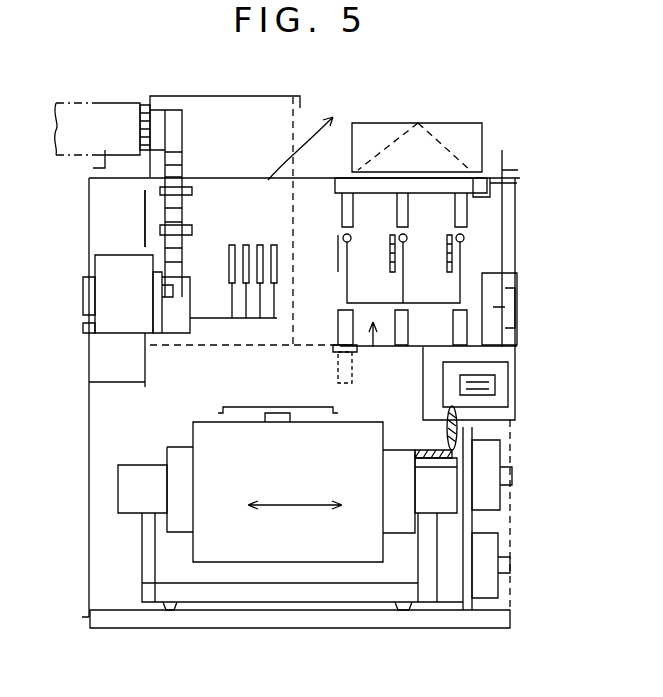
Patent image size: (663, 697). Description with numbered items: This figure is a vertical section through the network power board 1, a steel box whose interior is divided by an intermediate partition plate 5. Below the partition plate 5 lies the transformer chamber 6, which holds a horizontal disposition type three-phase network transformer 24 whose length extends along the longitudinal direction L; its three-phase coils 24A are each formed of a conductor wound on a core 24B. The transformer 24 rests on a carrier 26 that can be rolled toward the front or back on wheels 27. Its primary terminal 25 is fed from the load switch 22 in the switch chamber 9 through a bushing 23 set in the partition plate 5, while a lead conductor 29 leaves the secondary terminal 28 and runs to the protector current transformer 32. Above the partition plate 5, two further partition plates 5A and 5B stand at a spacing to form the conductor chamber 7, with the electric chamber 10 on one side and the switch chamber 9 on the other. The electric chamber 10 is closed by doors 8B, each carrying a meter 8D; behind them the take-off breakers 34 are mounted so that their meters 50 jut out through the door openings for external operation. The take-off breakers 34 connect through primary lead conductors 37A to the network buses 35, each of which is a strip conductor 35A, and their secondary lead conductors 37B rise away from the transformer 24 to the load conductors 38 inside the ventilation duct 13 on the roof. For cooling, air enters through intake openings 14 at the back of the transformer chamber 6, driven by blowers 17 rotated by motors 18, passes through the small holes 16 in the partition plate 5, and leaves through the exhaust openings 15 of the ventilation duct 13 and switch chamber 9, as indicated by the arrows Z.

The network power board 1 is at (168, 77).
The intermediate partition plate 5 is at (487, 343).
The partition plate 5A is at (140, 214).
The partition plate 5B is at (296, 187).
The transformer chamber 6 is at (100, 497).
The conductor chamber 7 is at (220, 200).
The doors 8B is at (88, 242).
The meter 8D is at (100, 355).
The switch chamber 9 is at (490, 205).
The electric chamber 10 is at (100, 216).
The ventilation duct 13 is at (260, 125).
The intake openings 14 is at (510, 490).
The exhaust openings 15 is at (306, 112).
The small holes 16 is at (167, 350).
The blowers 17 is at (486, 583).
The motors 18 is at (508, 565).
The load switch 22 is at (470, 247).
The bushing 23 is at (338, 335).
The three-phase network transformer 24 is at (265, 462).
The three-phase coils 24A is at (262, 562).
The core 24B is at (120, 498).
The primary terminal 25 is at (348, 385).
The carrier 26 is at (332, 593).
The wheels 27 is at (170, 628).
The secondary terminal 28 is at (437, 448).
The lead conductor 29 is at (455, 430).
The protector current transformer 32 is at (500, 388).
The take-off breakers 34 is at (105, 290).
The network buses 35 is at (221, 266).
The strip conductor 35A is at (295, 188).
The primary lead conductors 37A is at (212, 320).
The secondary lead conductors 37B is at (172, 272).
The load conductors 38 is at (78, 117).
The meters 50 is at (83, 305).
The arrows Z is at (453, 163).
The longitudinal direction L is at (297, 507).